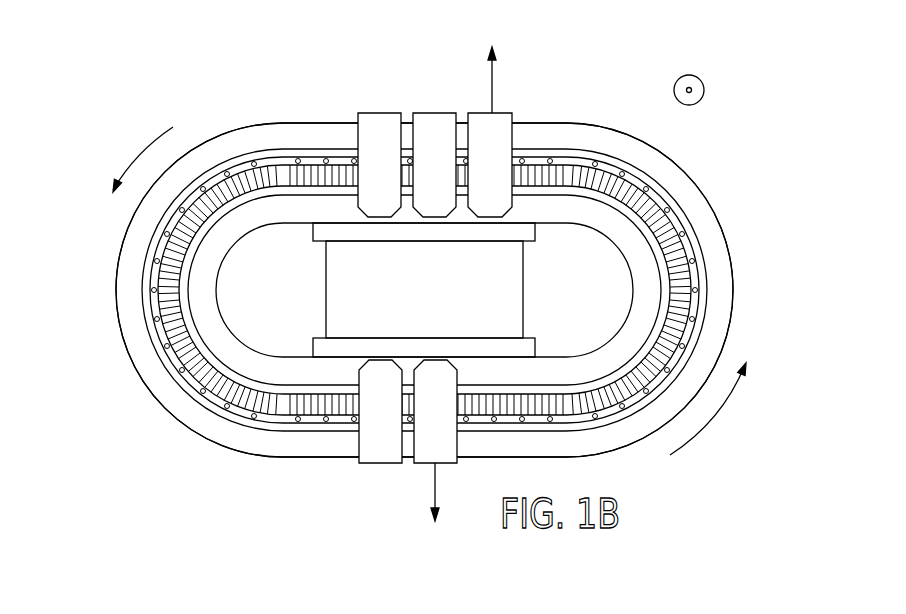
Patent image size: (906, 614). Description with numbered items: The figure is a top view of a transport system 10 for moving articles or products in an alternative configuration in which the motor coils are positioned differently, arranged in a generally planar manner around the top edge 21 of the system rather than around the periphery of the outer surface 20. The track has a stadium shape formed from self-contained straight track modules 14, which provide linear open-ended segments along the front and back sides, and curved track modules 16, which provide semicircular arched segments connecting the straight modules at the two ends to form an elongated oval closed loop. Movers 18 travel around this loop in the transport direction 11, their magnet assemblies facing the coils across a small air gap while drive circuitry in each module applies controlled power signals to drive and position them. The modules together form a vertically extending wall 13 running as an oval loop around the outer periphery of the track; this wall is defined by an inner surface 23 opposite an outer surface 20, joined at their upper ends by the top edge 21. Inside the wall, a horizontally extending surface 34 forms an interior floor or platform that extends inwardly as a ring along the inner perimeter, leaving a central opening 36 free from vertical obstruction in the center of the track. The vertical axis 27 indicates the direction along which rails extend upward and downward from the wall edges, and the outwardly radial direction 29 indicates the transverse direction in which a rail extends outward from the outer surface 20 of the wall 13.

The transport system 10 is at (710, 147).
The transport direction 11 is at (140, 153).
The vertically extending wall 13 is at (697, 205).
The straight track modules 14 is at (267, 135).
The curved track modules 16 is at (120, 282).
The movers 18 is at (378, 130).
The outer surface 20 is at (281, 456).
The top edge 21 is at (525, 135).
The inner surface 23 is at (282, 385).
The vertical axis 27 is at (677, 78).
The outwardly radial direction 29 is at (491, 88).
The horizontally extending surface 34 is at (257, 213).
The central opening 36 is at (605, 297).